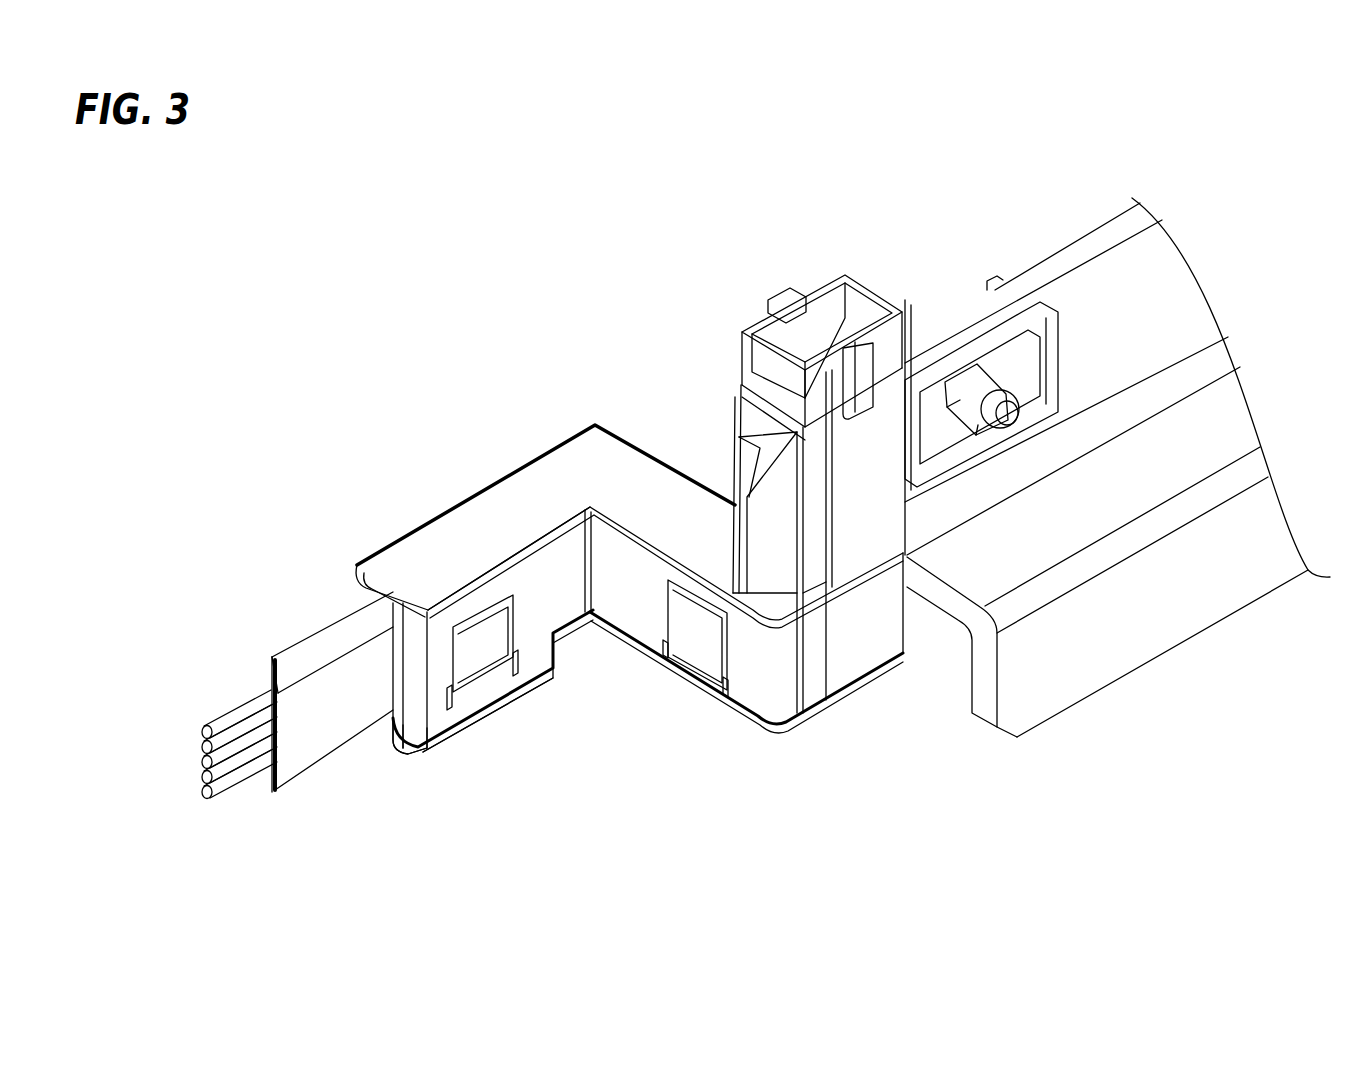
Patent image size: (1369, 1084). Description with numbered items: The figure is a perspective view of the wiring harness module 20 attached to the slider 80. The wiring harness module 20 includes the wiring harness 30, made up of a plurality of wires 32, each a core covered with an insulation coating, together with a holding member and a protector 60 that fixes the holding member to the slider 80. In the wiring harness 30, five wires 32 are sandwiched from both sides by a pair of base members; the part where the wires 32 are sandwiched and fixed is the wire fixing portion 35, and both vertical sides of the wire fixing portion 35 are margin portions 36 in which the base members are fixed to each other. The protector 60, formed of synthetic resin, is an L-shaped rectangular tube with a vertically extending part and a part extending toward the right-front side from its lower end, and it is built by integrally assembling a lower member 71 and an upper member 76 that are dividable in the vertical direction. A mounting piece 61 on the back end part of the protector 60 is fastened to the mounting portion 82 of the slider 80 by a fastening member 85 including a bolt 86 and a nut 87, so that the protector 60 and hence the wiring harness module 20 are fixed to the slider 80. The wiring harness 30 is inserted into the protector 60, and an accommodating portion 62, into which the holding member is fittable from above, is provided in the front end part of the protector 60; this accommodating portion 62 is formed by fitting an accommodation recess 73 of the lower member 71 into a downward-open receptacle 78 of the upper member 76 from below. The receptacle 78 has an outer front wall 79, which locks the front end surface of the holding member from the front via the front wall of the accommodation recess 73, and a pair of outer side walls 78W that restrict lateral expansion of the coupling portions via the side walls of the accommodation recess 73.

The wiring harness module 20 is at (462, 400).
The wiring harness 30 is at (331, 780).
The wires 32 is at (228, 785).
The wire fixing portion 35 is at (298, 735).
The margin portions 36 is at (342, 745).
The protector 60 is at (738, 814).
The mounting piece 61 is at (1010, 350).
The accommodating portion 62 is at (581, 814).
The lower member 71 is at (737, 717).
The accommodation recess 73 is at (473, 733).
The upper member 76 is at (653, 622).
The receptacle 78 is at (530, 637).
The outer side walls 78W is at (495, 585).
The outer front wall 79 is at (406, 694).
The slider 80 is at (1153, 627).
The mounting portion 82 is at (1098, 297).
The fastening member 85 is at (891, 226).
The bolt 86 is at (1003, 413).
The nut 87 is at (958, 398).